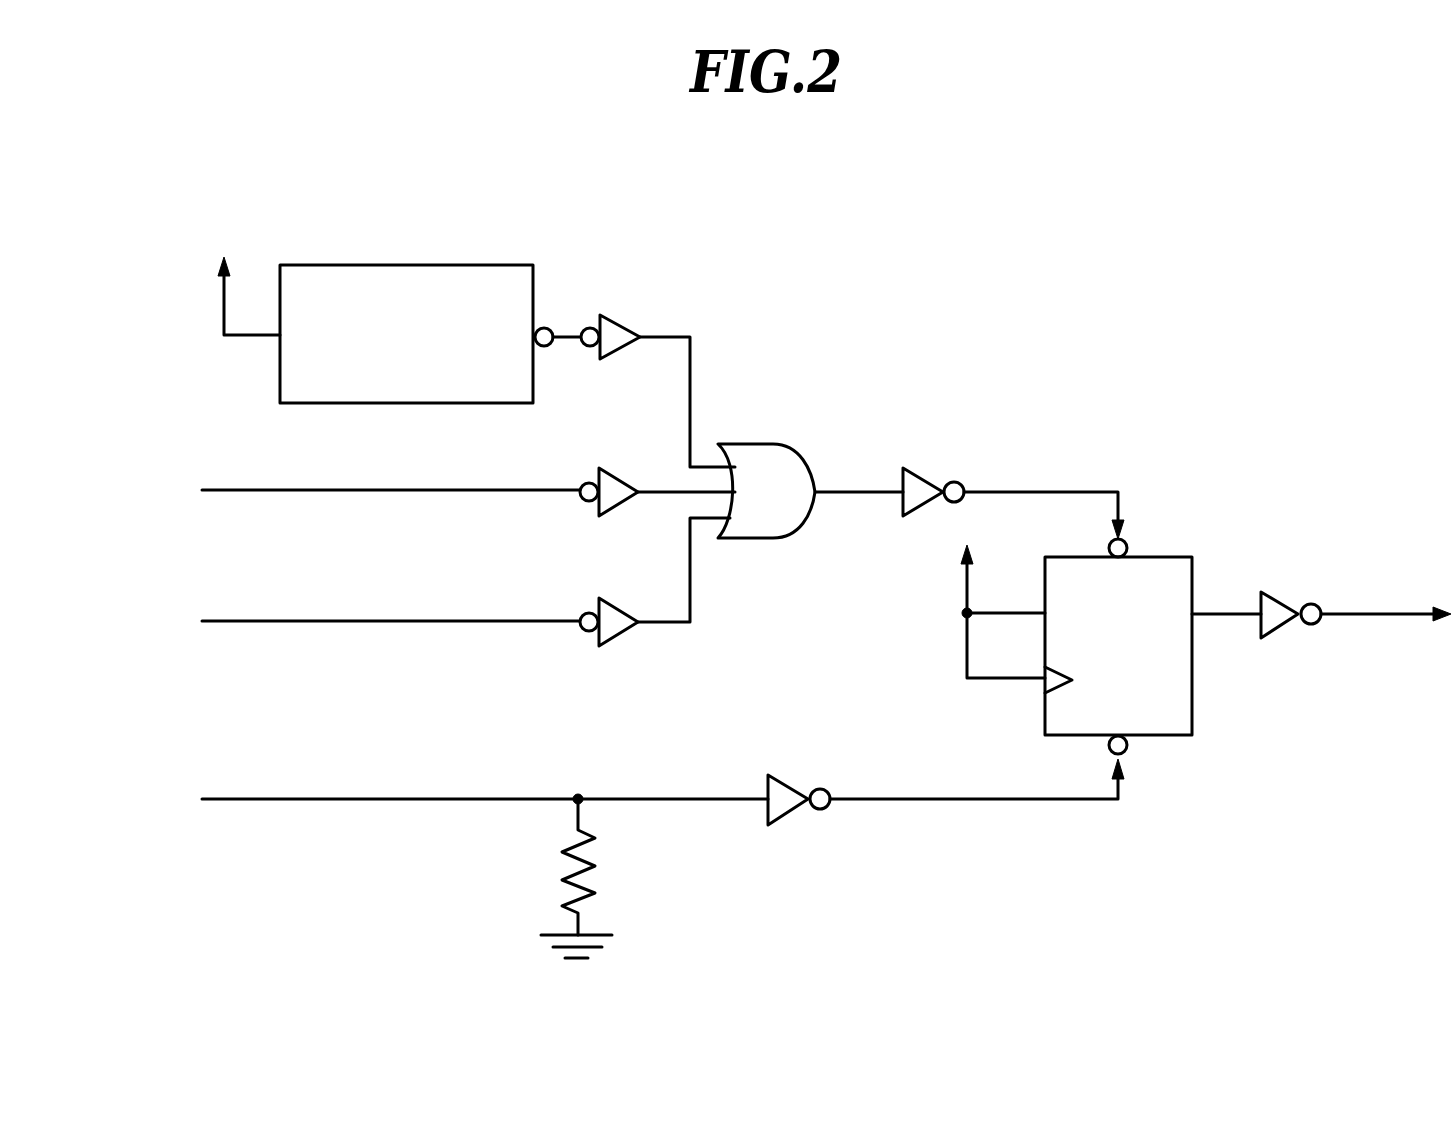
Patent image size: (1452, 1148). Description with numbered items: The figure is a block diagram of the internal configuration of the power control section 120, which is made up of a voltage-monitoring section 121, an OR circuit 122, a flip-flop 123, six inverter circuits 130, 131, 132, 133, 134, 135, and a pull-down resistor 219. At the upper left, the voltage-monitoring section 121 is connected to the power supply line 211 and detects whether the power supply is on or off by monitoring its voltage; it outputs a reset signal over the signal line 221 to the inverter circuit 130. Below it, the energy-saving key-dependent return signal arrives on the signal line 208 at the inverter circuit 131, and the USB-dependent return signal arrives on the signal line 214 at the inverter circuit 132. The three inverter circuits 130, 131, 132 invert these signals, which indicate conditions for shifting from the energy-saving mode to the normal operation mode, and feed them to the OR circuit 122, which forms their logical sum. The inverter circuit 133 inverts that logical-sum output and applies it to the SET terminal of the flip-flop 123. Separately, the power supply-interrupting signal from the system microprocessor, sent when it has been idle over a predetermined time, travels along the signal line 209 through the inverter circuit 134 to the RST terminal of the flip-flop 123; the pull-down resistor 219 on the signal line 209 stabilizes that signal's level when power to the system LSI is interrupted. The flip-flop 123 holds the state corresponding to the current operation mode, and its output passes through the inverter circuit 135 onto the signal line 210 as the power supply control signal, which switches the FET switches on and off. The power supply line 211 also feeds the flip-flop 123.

The power control section 120 is at (1023, 252).
The voltage-monitoring section 121 is at (347, 265).
The OR circuit 122 is at (762, 446).
The flip-flop 123 is at (1194, 686).
The inverter circuit 130 is at (627, 320).
The inverter circuit 131 is at (622, 470).
The inverter circuit 132 is at (620, 600).
The inverter circuit 133 is at (931, 477).
The inverter circuit 134 is at (788, 780).
The inverter circuit 135 is at (1289, 592).
The signal line 208 is at (348, 490).
The signal line 209 is at (348, 799).
The signal line 210 is at (1368, 613).
The power supply line 211 is at (222, 309).
The signal line 214 is at (348, 621).
The pull-down resistor 219 is at (562, 886).
The signal line 221 is at (563, 335).